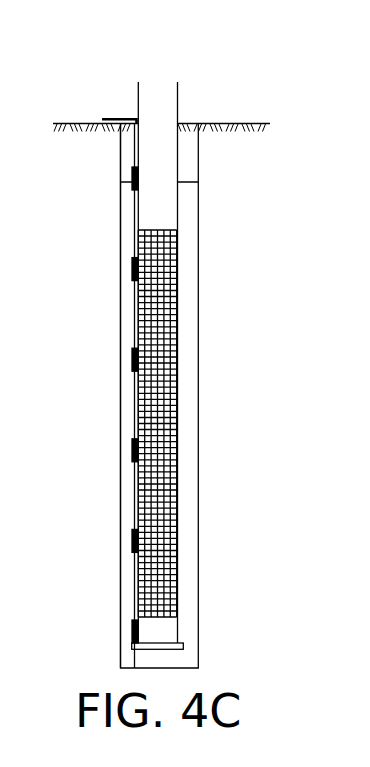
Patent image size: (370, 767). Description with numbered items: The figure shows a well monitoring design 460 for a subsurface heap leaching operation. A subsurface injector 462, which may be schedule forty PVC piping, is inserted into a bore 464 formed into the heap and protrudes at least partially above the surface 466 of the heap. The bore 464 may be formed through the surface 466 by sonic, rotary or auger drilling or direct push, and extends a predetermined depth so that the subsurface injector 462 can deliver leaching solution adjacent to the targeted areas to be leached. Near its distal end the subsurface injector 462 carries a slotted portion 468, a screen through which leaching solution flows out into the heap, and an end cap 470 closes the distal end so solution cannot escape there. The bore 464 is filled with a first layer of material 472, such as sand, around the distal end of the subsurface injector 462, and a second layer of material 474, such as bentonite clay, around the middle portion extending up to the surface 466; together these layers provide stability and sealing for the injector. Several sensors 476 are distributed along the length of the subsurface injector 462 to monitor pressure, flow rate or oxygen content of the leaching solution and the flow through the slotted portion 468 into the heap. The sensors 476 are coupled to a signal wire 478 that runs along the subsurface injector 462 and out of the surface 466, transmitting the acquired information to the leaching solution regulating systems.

The well monitoring design 460 is at (104, 28).
The subsurface injector 462 is at (178, 98).
The bore 464 is at (198, 209).
The surface of the heap 466 is at (55, 123).
The slotted portion 468 is at (177, 583).
The end cap 470 is at (183, 647).
The first layer of material 472 is at (120, 592).
The second layer of material 474 is at (120, 150).
The sensors 476 is at (131, 457).
The signal wire 478 is at (110, 117).